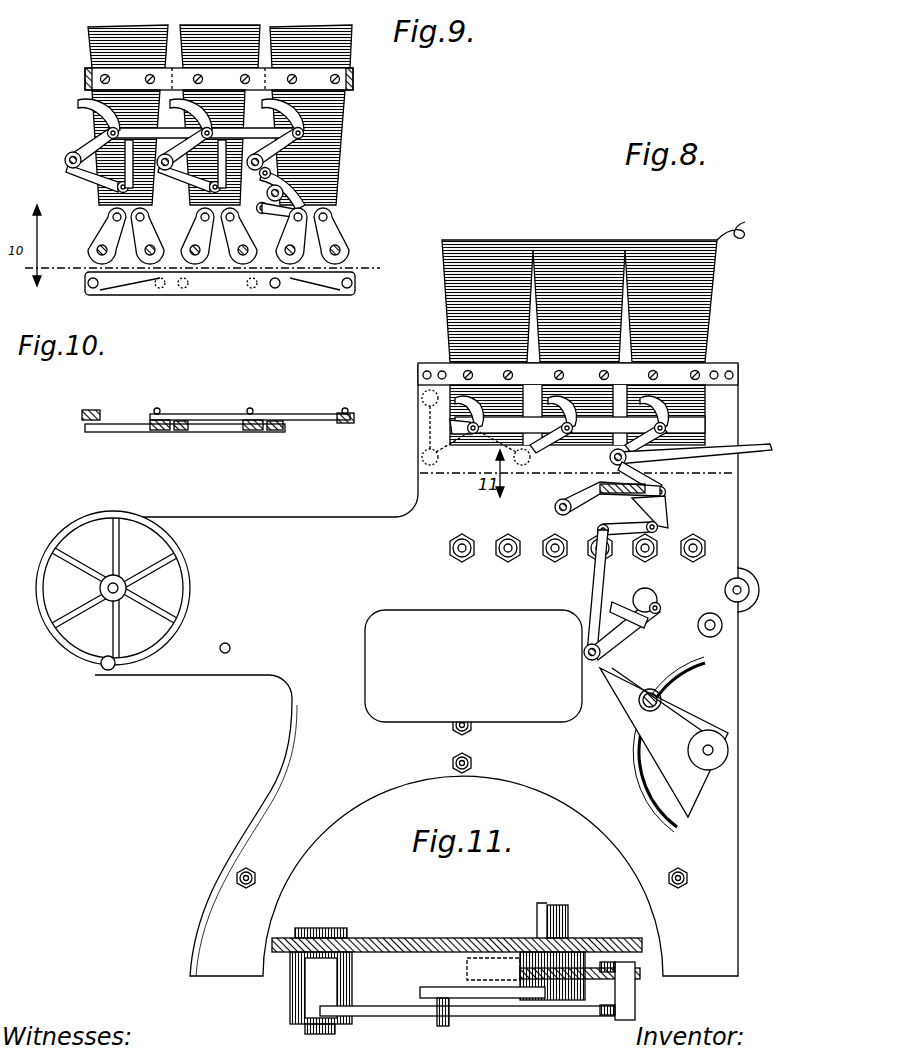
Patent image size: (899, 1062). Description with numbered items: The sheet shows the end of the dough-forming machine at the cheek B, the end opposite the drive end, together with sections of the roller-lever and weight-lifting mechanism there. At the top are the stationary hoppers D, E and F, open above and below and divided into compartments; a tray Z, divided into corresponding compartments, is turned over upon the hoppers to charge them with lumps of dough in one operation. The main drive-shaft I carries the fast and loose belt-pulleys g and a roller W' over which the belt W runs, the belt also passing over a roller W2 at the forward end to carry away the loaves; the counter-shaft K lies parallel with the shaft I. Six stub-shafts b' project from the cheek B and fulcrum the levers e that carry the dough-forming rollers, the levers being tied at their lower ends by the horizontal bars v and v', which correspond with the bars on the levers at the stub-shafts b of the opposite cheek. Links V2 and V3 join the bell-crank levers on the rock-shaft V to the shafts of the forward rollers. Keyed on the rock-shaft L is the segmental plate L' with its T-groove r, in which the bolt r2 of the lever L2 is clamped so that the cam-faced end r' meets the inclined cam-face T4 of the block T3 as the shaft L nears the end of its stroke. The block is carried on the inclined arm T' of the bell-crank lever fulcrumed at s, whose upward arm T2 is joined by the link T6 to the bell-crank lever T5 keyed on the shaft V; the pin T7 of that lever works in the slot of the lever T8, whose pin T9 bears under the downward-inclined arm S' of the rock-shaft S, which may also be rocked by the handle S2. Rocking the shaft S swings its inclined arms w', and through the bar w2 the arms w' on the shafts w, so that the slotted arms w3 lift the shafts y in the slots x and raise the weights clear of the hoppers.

In FIG. 8, the end cheek B is at (242, 828).
In FIG. 11, the end cheek B is at (432, 936).
In FIG. 8, the belt W is at (473, 666).
In FIG. 8, the roller W' is at (752, 576).
In FIG. 8, the roller W2 is at (775, 604).
In FIG. 8, the fast and loose belt-pulleys g is at (75, 540).
In FIG. 8, the main drive-shaft I is at (100, 588).
In FIG. 8, the counter-shaft K is at (228, 644).
In FIG. 8, the tray Z is at (748, 262).
In FIG. 8, the hopper F is at (485, 279).
In FIG. 8, the hopper E is at (575, 279).
In FIG. 8, the hopper D is at (671, 279).
In FIG. 9, the shaft w is at (145, 156).
In FIG. 8, the shaft w is at (476, 431).
In FIG. 9, the inclined arm w' is at (174, 142).
In FIG. 8, the inclined arm w' is at (535, 422).
In FIG. 9, the horizontally-extending bar w2 is at (140, 128).
In FIG. 8, the horizontally-extending bar w2 is at (594, 430).
In FIG. 9, the arm w3 is at (112, 188).
In FIG. 9, the slot x is at (80, 106).
In FIG. 9, the shaft y is at (100, 200).
In FIG. 9, the guide block Y is at (330, 185).
In FIG. 8, the rock-shaft V is at (658, 511).
In FIG. 11, the rock-shaft V is at (570, 915).
In FIG. 9, the link V2 is at (338, 146).
In FIG. 9, the link V3 is at (268, 215).
In FIG. 9, the rock-shaft S is at (183, 140).
In FIG. 8, the rock-shaft S is at (602, 462).
In FIG. 8, the downward-inclined arm S' is at (608, 496).
In FIG. 11, the downward-inclined arm S' is at (437, 1003).
In FIG. 8, the lever or handle S2 is at (752, 448).
In FIG. 8, the fulcrum s is at (585, 665).
In FIG. 8, the inclined arm T' is at (612, 601).
In FIG. 8, the upward-extending arm T2 is at (655, 538).
In FIG. 8, the weight or block T3 is at (660, 604).
In FIG. 8, the inclined cam-face T4 is at (660, 626).
In FIG. 8, the bell-crank lever T5 is at (672, 512).
In FIG. 11, the bell-crank lever T5 is at (445, 990).
In FIG. 8, the link T6 is at (596, 545).
In FIG. 8, the laterally-extending pin T7 is at (597, 497).
In FIG. 11, the laterally-extending pin T7 is at (440, 1026).
In FIG. 8, the arm or lever T8 is at (611, 523).
In FIG. 8, the pin T9 is at (668, 492).
In FIG. 11, the pin T9 is at (635, 990).
In FIG. 9, the stub-shaft b is at (218, 260).
In FIG. 8, the stub-shaft b is at (576, 565).
In FIG. 8, the stub-shaft b' is at (605, 545).
In FIG. 9, the lever e is at (150, 222).
In FIG. 10, the lever e is at (82, 413).
In FIG. 9, the horizontal bar v is at (220, 293).
In FIG. 10, the horizontal bar v is at (250, 400).
In FIG. 9, the horizontal bar v' is at (206, 296).
In FIG. 10, the horizontal bar v' is at (185, 440).
In FIG. 8, the rock-shaft L is at (732, 750).
In FIG. 8, the segmental plate L' is at (669, 744).
In FIG. 8, the lever L2 is at (722, 708).
In FIG. 8, the T-groove r is at (668, 701).
In FIG. 8, the cam-faced end r' is at (622, 701).
In FIG. 8, the bolt r2 is at (645, 712).